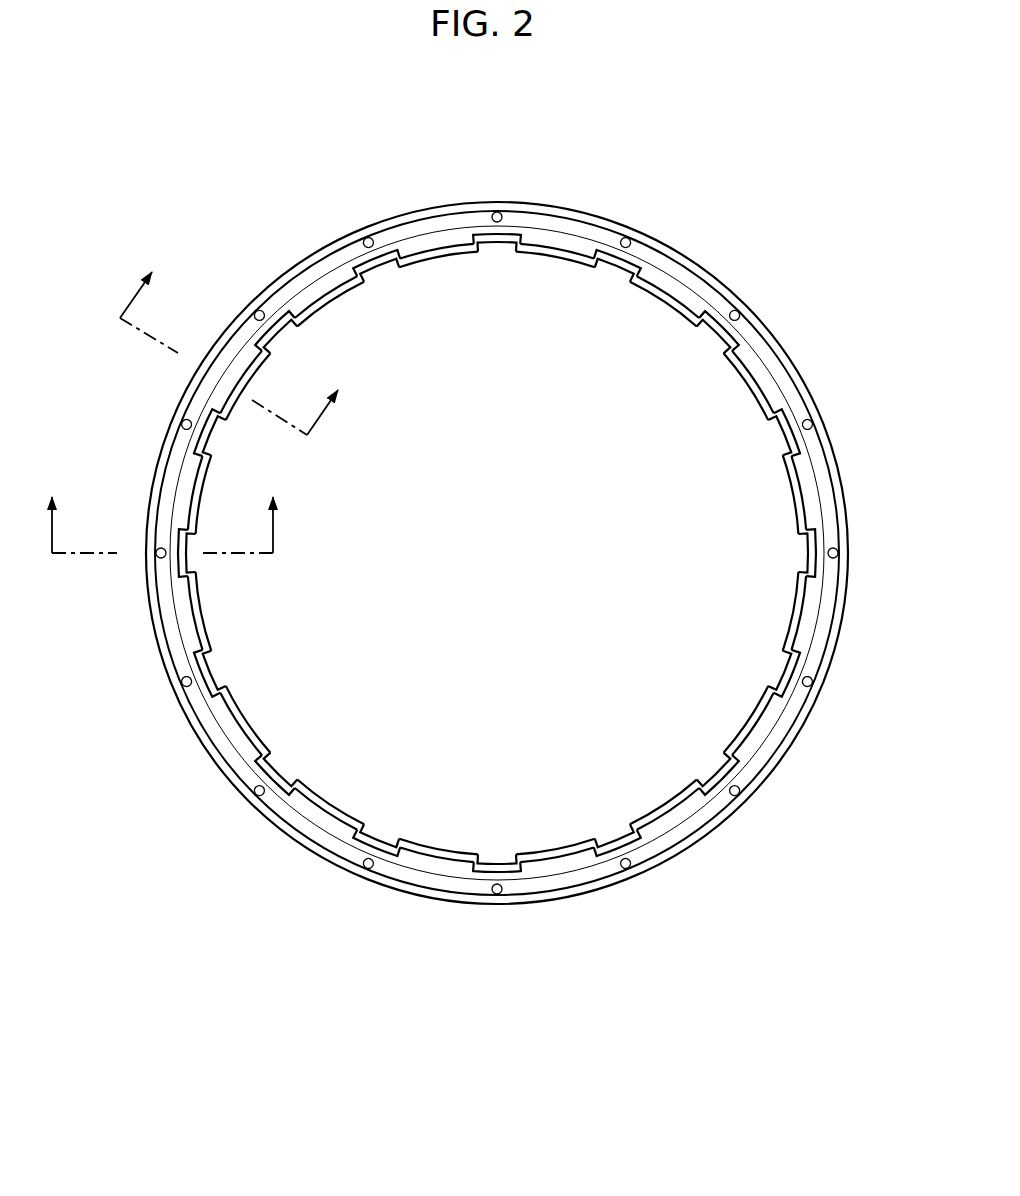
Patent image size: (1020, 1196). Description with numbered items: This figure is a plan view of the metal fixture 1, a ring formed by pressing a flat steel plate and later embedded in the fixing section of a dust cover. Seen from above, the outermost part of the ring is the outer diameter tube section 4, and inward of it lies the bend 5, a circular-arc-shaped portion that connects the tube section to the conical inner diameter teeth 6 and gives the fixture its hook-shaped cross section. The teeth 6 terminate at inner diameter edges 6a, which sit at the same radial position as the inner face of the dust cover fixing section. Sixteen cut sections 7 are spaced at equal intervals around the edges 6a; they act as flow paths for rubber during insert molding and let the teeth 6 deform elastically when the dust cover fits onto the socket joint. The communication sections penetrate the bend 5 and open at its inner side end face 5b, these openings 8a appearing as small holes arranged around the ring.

The metal fixture 1 is at (444, 549).
The outer diameter tube section 4 is at (298, 262).
The bend 5 is at (497, 549).
The inner side end face of the bend 5b is at (425, 227).
The inner diameter teeth 6 is at (496, 502).
The inner diameter edges 6a is at (452, 254).
The cut sections 7 is at (491, 245).
The openings 8a is at (497, 213).